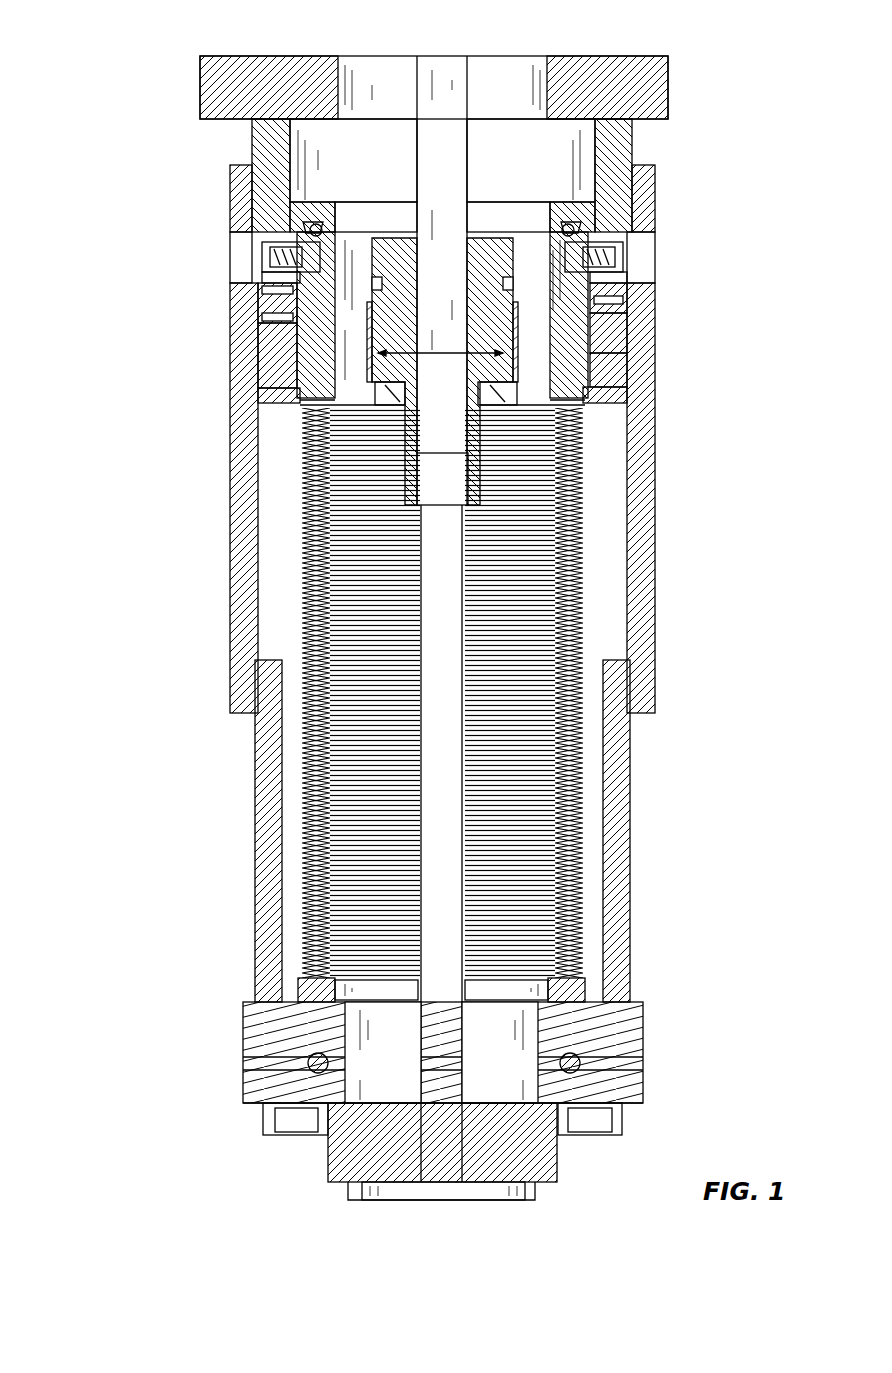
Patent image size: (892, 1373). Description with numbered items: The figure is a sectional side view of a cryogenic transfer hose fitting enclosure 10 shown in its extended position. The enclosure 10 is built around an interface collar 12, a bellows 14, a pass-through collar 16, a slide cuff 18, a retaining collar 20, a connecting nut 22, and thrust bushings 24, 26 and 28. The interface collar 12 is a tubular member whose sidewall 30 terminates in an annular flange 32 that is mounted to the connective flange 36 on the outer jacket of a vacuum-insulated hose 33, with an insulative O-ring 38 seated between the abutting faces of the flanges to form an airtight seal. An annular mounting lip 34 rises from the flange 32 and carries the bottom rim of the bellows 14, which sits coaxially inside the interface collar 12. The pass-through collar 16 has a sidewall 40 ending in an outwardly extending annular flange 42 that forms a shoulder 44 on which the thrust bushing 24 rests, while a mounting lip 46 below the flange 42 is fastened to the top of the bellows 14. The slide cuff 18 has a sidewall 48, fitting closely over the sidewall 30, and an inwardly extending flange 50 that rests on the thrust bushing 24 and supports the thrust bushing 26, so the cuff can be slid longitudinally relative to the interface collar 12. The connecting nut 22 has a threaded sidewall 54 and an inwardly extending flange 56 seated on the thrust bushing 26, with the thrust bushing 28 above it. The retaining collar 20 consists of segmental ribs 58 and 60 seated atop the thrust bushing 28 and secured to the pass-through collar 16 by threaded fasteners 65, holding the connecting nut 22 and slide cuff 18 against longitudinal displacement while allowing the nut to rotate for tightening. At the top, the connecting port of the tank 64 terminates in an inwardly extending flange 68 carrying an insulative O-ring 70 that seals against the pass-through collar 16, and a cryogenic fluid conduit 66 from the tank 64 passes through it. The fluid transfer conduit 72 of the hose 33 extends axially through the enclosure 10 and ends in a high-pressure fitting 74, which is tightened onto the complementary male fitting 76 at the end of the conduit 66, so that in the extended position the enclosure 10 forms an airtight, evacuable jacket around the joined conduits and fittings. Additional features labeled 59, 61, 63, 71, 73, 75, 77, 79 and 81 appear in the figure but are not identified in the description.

The cryogenic transfer hose fitting enclosure 10 is at (126, 79).
The interface collar 12 is at (640, 948).
The bellows 14 is at (580, 820).
The pass-through collar 16 is at (622, 367).
The slide cuff 18 is at (657, 668).
The retaining collar 20 is at (262, 244).
The connecting nut 22 is at (656, 168).
The thrust bushing 24 is at (612, 355).
The thrust bushing 26 is at (618, 322).
The thrust bushing 28 is at (612, 300).
The sidewall 30 is at (620, 885).
The annular flange 32 is at (615, 1040).
The vacuum-insulated hose 33 is at (330, 1160).
The annular mounting lip 34 is at (318, 990).
The connective flange 36 is at (625, 1080).
The insulative O-ring 38 is at (300, 1063).
The sidewall 40 is at (317, 330).
The annular flange 42 is at (312, 393).
The annular shoulder 44 is at (283, 360).
The annular mounting lip 46 is at (325, 410).
The sidewall 48 is at (640, 593).
The annular flange 50 is at (253, 332).
The sidewall 54 is at (237, 224).
The annular flange 56 is at (300, 312).
The segmental rib 58 is at (612, 290).
The bearing 59 is at (297, 248).
The segmental rib 60 is at (262, 285).
The cover 61 is at (645, 270).
The body wall 63 is at (590, 235).
The tank 64 is at (650, 83).
The threaded fasteners 65 is at (590, 262).
The cryogenic fluid conduit 66 is at (445, 72).
The radially-inwardly extending flange 68 is at (277, 210).
The insulative O-ring 70 is at (330, 232).
The seal groove 71 is at (308, 226).
The cryogenic fluid transfer conduit 72 is at (445, 722).
The cover body 73 is at (252, 153).
The high-pressure fitting 74 is at (503, 405).
The bore 75 is at (255, 187).
The male fitting 76 is at (493, 258).
The plate 77 is at (395, 395).
The bushing 79 is at (385, 372).
The gap 81 is at (500, 355).